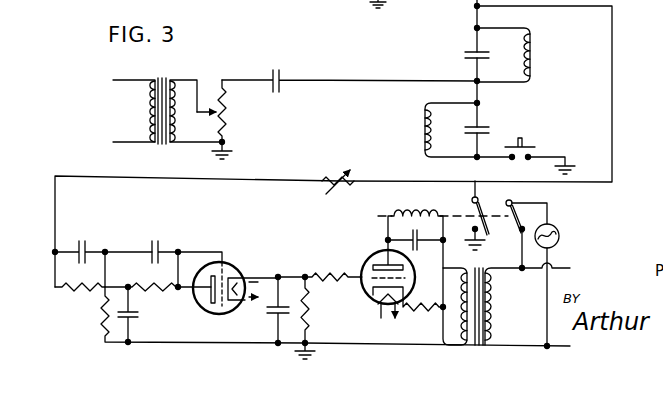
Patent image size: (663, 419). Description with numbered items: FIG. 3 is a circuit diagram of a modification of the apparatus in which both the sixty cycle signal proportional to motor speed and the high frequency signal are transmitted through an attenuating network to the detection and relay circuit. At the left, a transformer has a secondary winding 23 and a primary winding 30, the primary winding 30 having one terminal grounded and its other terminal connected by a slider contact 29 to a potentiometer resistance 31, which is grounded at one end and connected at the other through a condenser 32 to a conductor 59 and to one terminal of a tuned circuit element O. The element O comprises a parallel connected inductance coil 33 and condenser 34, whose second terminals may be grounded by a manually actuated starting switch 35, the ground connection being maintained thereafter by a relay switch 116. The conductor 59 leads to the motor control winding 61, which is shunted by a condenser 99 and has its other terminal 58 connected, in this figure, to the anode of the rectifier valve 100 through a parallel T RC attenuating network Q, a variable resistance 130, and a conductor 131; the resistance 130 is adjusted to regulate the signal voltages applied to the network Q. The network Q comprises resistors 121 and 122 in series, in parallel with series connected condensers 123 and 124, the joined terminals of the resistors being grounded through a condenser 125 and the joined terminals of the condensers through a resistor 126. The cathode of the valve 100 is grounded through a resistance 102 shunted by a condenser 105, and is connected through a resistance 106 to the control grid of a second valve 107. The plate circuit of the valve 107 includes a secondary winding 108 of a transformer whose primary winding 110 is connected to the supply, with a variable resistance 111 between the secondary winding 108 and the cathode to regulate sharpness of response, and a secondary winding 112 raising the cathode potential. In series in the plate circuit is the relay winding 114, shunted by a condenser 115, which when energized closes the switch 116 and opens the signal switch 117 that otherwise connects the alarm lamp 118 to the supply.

The secondary winding 23 is at (147, 120).
The slider contact 29 is at (210, 111).
The primary winding 30 is at (182, 113).
The potentiometer resistance 31 is at (226, 128).
The condenser 32 is at (280, 72).
The inductance coil 33 is at (437, 128).
The condenser 34 is at (489, 128).
The starting switch 35 is at (523, 142).
The motor terminal 58 is at (476, 6).
The conductor 59 is at (478, 96).
The control winding 61 is at (517, 46).
The condenser 99 is at (464, 56).
The electronic valve 100 is at (222, 266).
The resistance 102 is at (310, 315).
The condenser 105 is at (271, 315).
The resistance 106 is at (320, 283).
The electronic valve 107 is at (366, 264).
The secondary winding 108 is at (457, 287).
The primary winding 110 is at (495, 310).
The variable resistance 111 is at (440, 296).
The secondary winding 112 is at (449, 316).
The relay winding 114 is at (405, 212).
The condenser 115 is at (412, 232).
The relay switch 116 is at (483, 212).
The signal switch 117 is at (514, 232).
The electric lamp 118 is at (561, 235).
The resistor 121 is at (86, 292).
The resistor 122 is at (152, 283).
The condenser 123 is at (85, 245).
The condenser 124 is at (158, 245).
The condenser 125 is at (136, 313).
The resistor 126 is at (101, 320).
The variable resistance 130 is at (337, 166).
The conductor 131 is at (613, 104).
The tuned circuit element O is at (422, 115).
The attenuating circuit network Q is at (168, 220).